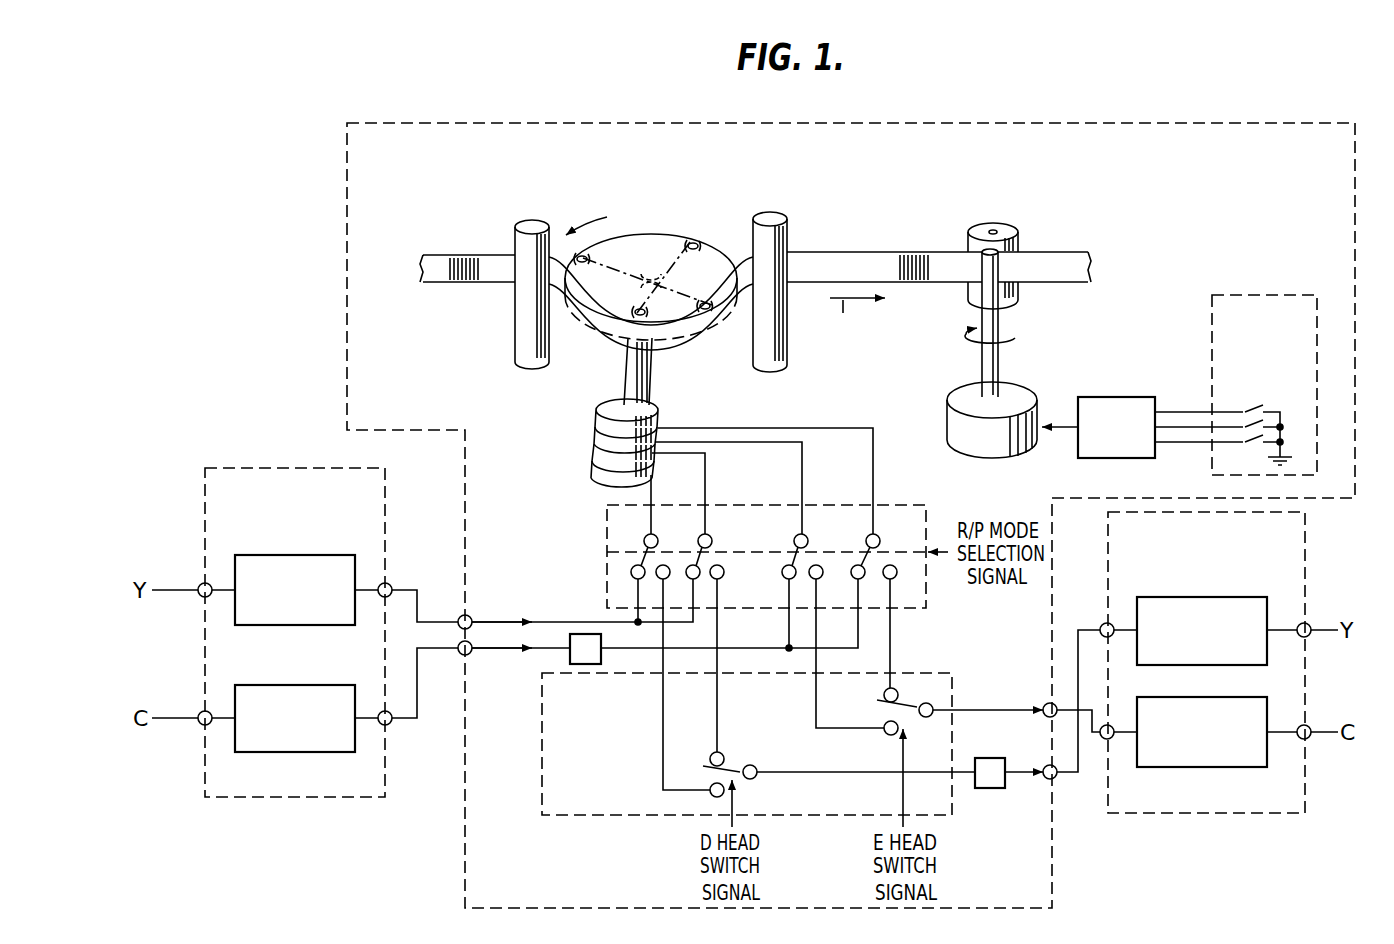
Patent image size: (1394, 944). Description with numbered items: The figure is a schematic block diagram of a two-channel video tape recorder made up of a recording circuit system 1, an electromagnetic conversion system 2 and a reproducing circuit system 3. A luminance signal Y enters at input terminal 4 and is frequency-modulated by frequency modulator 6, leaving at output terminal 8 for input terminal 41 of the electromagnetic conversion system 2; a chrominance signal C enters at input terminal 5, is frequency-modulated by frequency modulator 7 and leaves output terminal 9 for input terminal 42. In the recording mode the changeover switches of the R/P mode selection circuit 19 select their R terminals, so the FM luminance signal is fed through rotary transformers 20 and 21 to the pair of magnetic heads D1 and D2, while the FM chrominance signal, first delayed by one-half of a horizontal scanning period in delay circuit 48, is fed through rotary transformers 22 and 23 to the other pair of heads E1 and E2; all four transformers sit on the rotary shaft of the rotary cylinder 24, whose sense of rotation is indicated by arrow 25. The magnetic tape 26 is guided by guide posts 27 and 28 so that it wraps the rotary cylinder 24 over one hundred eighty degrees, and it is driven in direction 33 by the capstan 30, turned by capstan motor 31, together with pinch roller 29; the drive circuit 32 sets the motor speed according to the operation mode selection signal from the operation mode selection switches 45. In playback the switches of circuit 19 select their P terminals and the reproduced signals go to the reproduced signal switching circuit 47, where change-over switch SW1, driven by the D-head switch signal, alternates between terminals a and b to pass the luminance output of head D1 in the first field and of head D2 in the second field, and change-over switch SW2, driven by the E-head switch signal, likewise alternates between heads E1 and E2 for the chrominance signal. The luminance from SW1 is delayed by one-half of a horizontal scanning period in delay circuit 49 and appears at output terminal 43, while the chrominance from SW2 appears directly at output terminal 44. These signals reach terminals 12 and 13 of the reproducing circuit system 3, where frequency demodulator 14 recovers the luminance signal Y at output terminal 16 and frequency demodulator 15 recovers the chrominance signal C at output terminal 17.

The recording circuit system 1 is at (275, 468).
The electromagnetic conversion system 2 is at (600, 123).
The reproducing circuit system 3 is at (1305, 560).
The input terminal 4 is at (203, 582).
The input terminal 5 is at (203, 726).
The frequency modulator 6 is at (335, 625).
The frequency modulator 7 is at (335, 752).
The output terminal 8 is at (392, 580).
The output terminal 9 is at (389, 726).
The input terminal 12 is at (1102, 621).
The input terminal 13 is at (1100, 736).
The frequency demodulator 14 is at (1262, 665).
The frequency demodulator 15 is at (1228, 767).
The output terminal 16 is at (1310, 622).
The output terminal 17 is at (1310, 740).
The R/P mode selection circuit 19 is at (910, 505).
The rotary transformer 20 is at (591, 478).
The rotary transformer 21 is at (592, 452).
The rotary transformer 22 is at (593, 430).
The rotary transformer 23 is at (600, 410).
The rotary cylinder 24 is at (622, 233).
The drum rotation direction 25 is at (595, 212).
The magnetic tape 26 is at (883, 252).
The guide post 27 is at (520, 222).
The guide post 28 is at (790, 220).
The pinch roller 29 is at (1020, 228).
The capstan 30 is at (982, 360).
The capstan motor 31 is at (948, 413).
The drive circuit 32 is at (1130, 397).
The direction 33 is at (857, 319).
The input terminal 41 is at (471, 616).
The input terminal 42 is at (471, 655).
The output terminal 43 is at (1056, 779).
The output terminal 44 is at (1043, 703).
The operation mode selection switches 45 is at (1262, 295).
The reproduced signal switching circuit 47 is at (540, 775).
The delay circuit 48 is at (590, 634).
The delay circuit 49 is at (1000, 788).
The magnetic head D1 is at (635, 318).
The magnetic head D2 is at (692, 240).
The magnetic head E1 is at (580, 266).
The magnetic head E2 is at (706, 312).
The change-over switch SW1 is at (746, 775).
The change-over switch SW2 is at (906, 714).